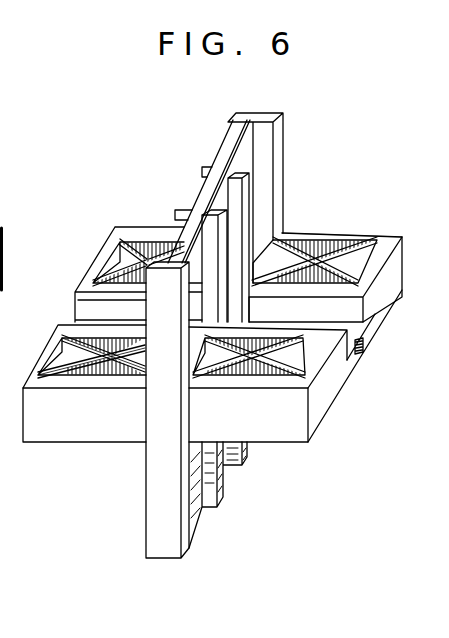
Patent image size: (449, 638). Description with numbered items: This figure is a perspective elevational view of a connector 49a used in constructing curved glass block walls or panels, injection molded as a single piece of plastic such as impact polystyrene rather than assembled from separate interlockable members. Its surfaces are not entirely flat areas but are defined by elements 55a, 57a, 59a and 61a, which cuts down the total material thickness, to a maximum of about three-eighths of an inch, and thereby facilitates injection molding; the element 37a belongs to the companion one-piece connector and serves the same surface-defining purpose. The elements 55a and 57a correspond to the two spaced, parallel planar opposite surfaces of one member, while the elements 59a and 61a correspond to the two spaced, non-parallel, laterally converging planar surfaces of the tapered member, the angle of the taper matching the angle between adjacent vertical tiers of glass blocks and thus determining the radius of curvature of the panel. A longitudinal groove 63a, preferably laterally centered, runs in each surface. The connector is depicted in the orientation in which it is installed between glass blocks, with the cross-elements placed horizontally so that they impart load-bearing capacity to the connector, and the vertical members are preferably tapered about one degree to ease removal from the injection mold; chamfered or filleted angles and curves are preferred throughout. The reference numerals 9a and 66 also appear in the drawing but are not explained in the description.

The adjacent element (partial) 9a is at (10, 239).
The surface-defining element 37a is at (173, 380).
The connector 49a is at (333, 187).
The parallel planar surface element 55a is at (387, 235).
The parallel planar surface element 57a is at (388, 311).
The laterally converging surface element 59a is at (280, 122).
The laterally converging surface element 61a is at (219, 136).
The longitudinal groove 63a is at (187, 193).
The reinforcing rib 66 is at (110, 362).